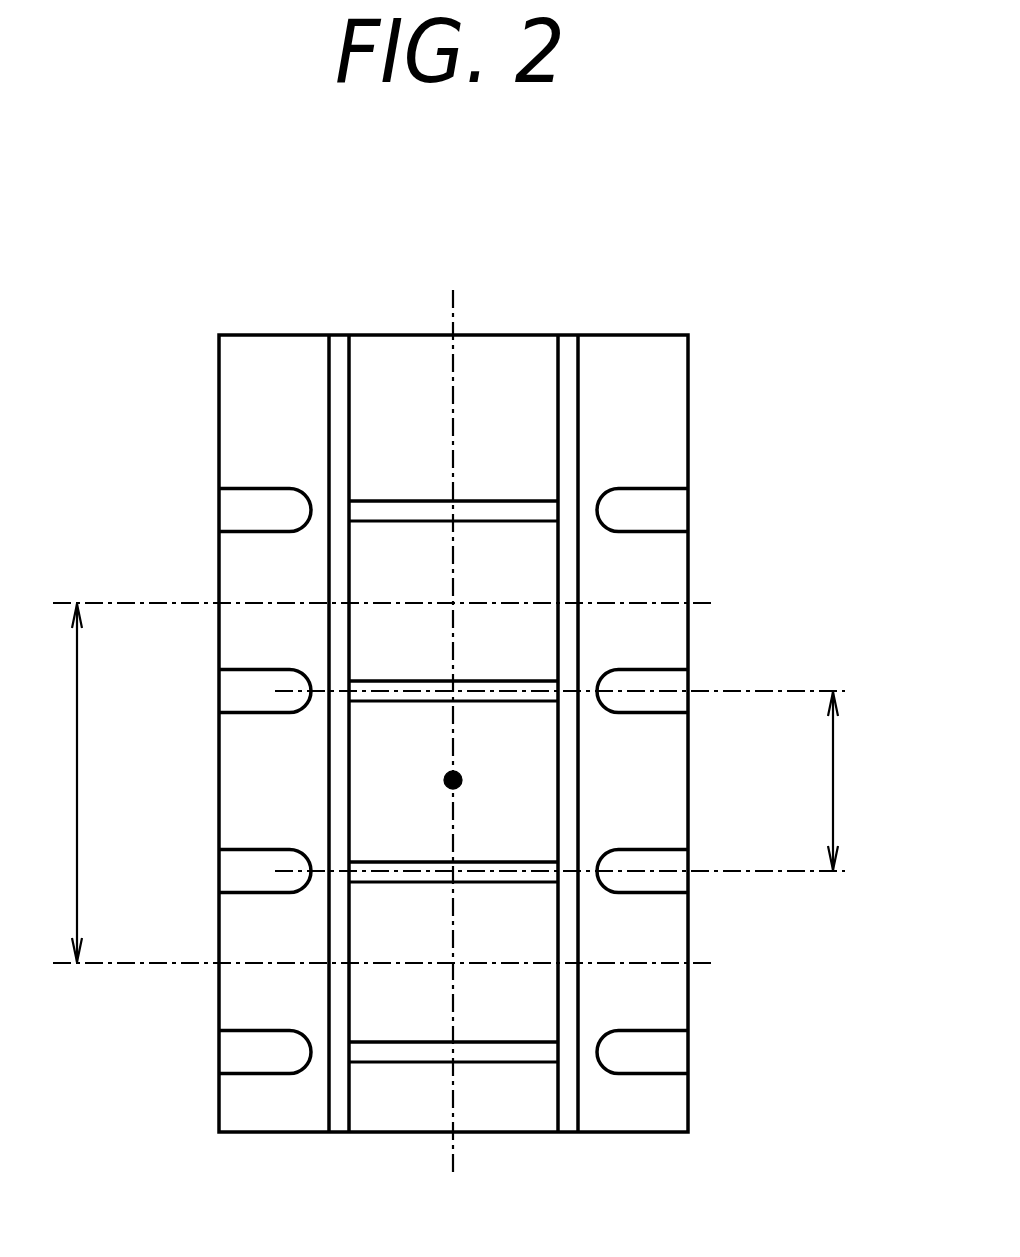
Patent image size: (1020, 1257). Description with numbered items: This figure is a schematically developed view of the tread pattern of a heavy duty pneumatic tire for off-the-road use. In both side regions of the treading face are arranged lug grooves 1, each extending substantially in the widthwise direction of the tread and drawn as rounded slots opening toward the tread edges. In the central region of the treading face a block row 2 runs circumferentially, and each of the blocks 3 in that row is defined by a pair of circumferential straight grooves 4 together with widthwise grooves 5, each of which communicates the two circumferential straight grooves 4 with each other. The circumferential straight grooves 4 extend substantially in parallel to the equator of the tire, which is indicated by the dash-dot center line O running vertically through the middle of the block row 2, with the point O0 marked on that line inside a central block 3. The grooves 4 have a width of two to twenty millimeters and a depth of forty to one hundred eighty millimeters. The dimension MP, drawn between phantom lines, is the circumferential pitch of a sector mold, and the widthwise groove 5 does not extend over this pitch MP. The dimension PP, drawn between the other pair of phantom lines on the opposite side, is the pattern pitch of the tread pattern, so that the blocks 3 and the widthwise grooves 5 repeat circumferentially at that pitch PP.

The lug groove 1 is at (252, 508).
The block row 2 is at (496, 367).
The block 3 is at (413, 455).
The circumferential straight groove 4 is at (340, 351).
The widthwise groove 5 is at (493, 509).
The center line O is at (453, 702).
The origin point O0 is at (459, 773).
The circumferential pitch of a sector mold MP is at (370, 783).
The pattern pitch PP is at (581, 781).